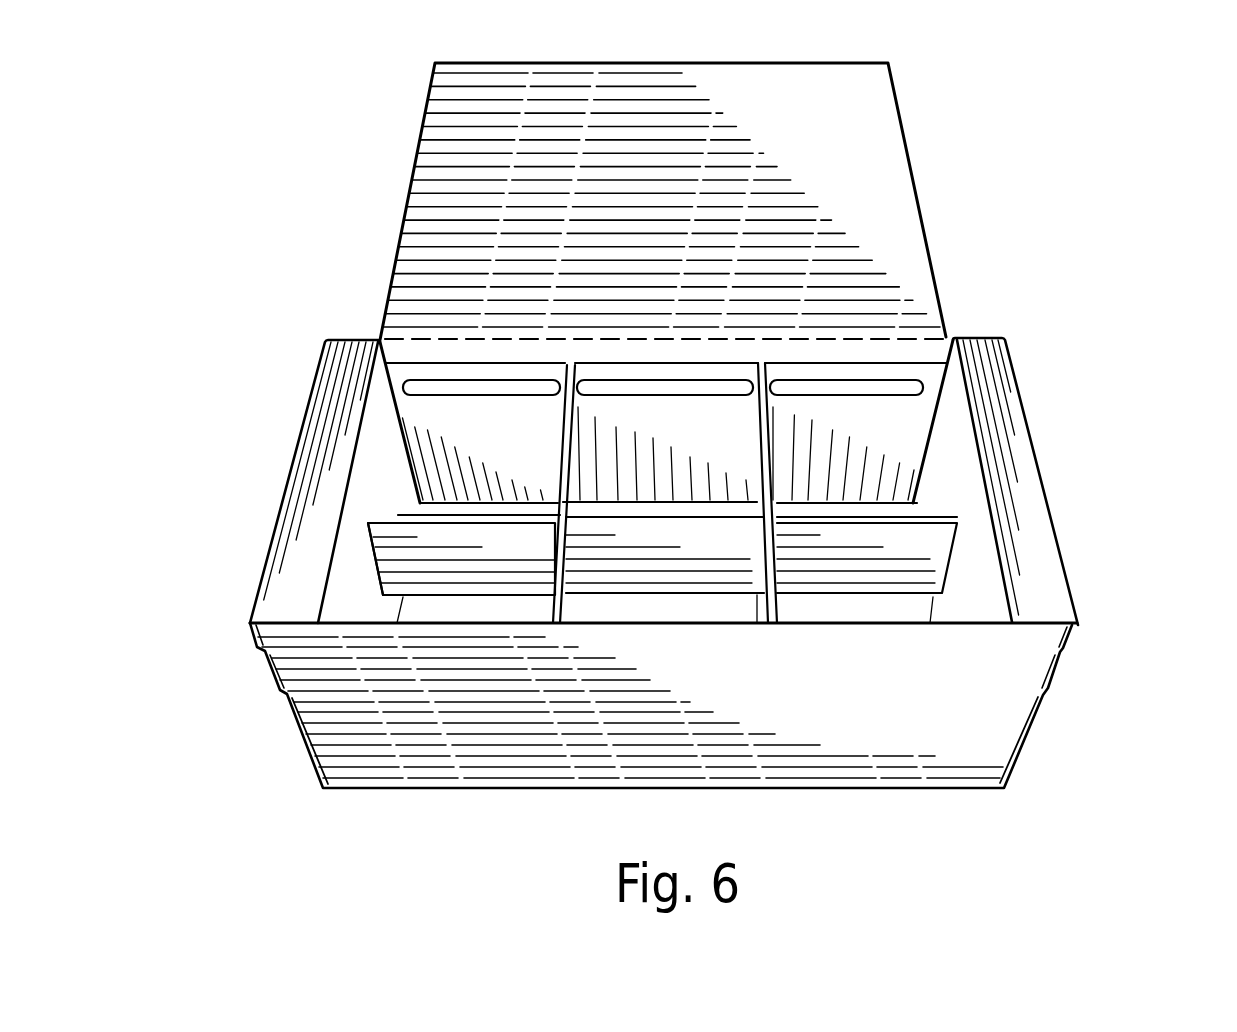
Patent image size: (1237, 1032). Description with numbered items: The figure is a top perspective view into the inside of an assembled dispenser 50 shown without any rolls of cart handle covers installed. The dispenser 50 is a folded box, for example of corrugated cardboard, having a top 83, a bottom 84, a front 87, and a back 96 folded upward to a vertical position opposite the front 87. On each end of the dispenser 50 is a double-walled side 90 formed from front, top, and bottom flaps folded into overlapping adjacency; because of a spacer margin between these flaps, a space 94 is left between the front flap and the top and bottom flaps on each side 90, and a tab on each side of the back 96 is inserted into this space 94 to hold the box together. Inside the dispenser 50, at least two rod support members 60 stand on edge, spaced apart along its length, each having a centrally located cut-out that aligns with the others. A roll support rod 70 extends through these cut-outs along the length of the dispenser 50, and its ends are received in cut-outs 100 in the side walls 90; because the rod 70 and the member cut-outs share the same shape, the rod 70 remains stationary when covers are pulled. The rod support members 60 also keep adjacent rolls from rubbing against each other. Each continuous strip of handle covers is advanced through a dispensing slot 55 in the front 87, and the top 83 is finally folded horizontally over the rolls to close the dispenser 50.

The dispenser 50 is at (1078, 621).
The dispensing slot 55 is at (425, 390).
The rod support member 60 is at (557, 483).
The roll support rod 70 is at (927, 553).
The top 83 is at (912, 275).
The bottom 84 is at (450, 610).
The front 87 is at (457, 442).
The side 90 is at (295, 592).
The space 94 is at (1037, 637).
The back 96 is at (990, 740).
The cut-out 100 is at (373, 557).